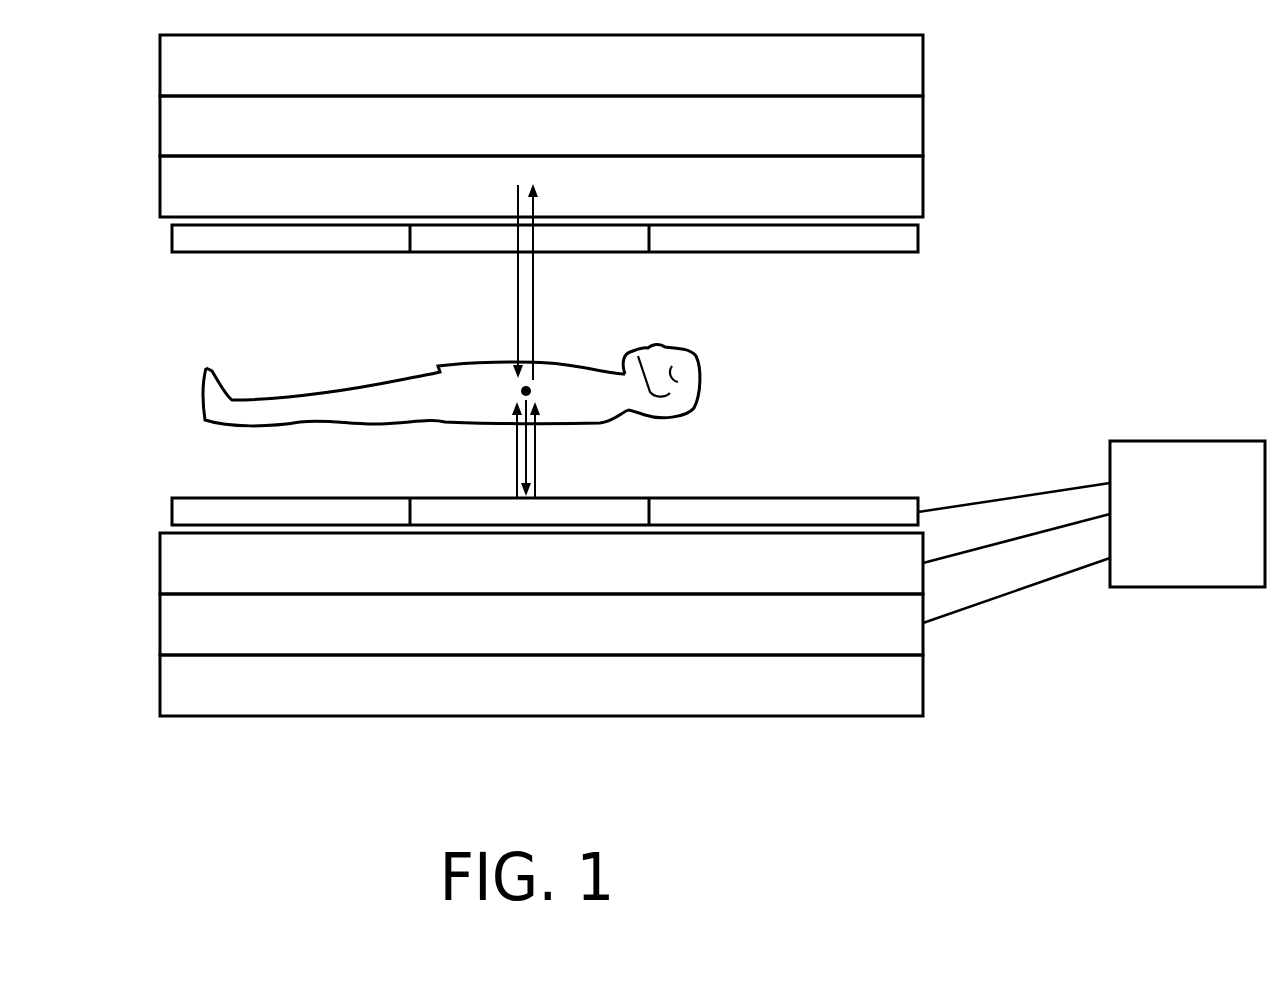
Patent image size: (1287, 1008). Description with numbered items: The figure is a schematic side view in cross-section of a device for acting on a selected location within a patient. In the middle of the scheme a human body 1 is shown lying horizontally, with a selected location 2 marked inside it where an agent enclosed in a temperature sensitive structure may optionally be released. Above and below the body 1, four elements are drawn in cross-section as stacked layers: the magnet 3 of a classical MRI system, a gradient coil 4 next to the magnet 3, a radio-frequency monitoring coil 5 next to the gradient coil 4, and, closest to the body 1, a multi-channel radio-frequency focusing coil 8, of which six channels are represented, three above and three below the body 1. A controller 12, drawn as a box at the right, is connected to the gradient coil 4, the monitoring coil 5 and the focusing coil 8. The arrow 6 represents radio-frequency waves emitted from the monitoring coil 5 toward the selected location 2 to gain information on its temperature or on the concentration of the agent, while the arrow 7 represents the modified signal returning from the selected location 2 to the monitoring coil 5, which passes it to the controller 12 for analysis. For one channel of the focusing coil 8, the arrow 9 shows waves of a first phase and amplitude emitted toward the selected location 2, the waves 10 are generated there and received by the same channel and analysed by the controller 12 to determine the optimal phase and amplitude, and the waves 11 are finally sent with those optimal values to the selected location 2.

The human body 1 is at (682, 397).
The selected location 2 is at (520, 392).
The magnet 3 is at (172, 65).
The gradient coil 4 is at (172, 126).
The radio-frequency monitoring coil 5 is at (172, 188).
The radio-frequency waves 6 is at (516, 297).
The modified signal 7 is at (537, 297).
The multi-channel radio-frequency focusing coil 8 is at (244, 262).
The radio-frequency waves 9 is at (514, 446).
The radio-frequency waves 10 is at (521, 477).
The radio-frequency waves 11 is at (540, 452).
The controller 12 is at (1186, 441).